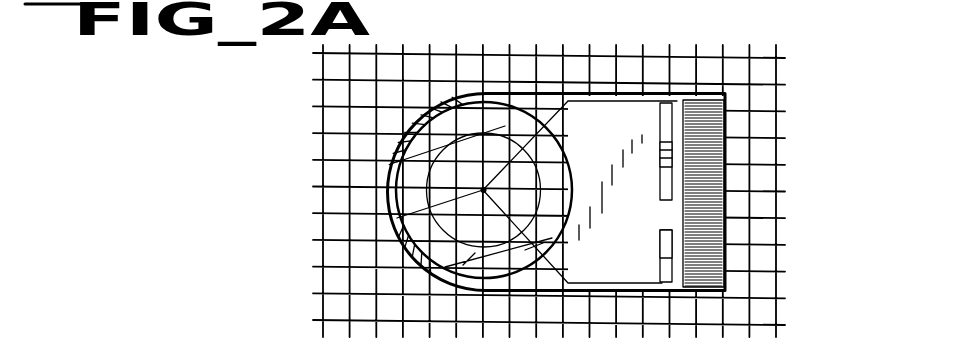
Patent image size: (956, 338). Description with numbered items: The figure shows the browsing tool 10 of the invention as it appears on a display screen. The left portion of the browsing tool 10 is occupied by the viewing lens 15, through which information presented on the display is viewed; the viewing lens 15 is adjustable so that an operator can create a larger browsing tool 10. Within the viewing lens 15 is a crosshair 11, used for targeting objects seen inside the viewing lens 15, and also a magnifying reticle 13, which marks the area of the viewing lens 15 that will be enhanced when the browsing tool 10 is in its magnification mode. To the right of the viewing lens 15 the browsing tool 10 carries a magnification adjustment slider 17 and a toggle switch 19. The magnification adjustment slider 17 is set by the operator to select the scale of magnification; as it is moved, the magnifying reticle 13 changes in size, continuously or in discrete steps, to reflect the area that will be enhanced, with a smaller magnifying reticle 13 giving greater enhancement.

The browsing tool 10 is at (731, 102).
The crosshair 11 is at (483, 190).
The magnifying reticle 13 is at (402, 218).
The viewing lens 15 is at (398, 155).
The magnification adjustment slider 17 is at (673, 152).
The toggle switch 19 is at (672, 244).